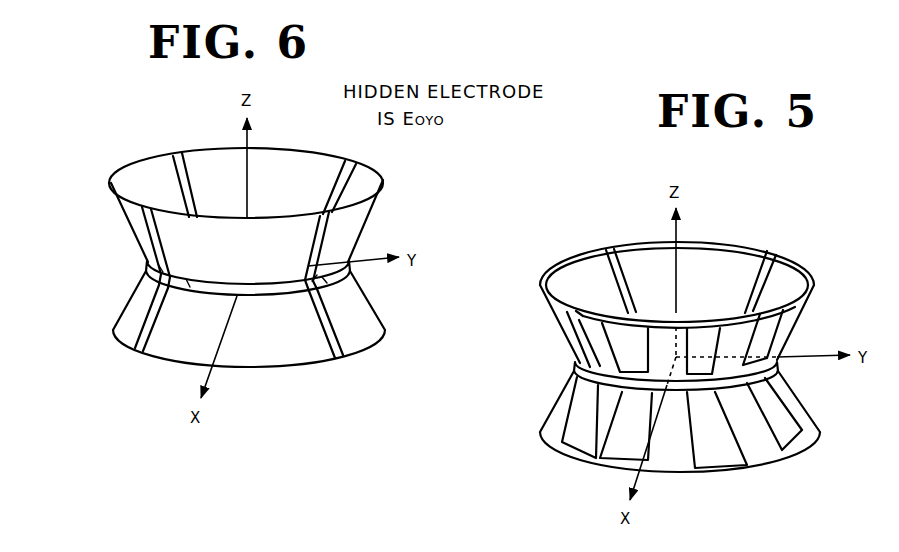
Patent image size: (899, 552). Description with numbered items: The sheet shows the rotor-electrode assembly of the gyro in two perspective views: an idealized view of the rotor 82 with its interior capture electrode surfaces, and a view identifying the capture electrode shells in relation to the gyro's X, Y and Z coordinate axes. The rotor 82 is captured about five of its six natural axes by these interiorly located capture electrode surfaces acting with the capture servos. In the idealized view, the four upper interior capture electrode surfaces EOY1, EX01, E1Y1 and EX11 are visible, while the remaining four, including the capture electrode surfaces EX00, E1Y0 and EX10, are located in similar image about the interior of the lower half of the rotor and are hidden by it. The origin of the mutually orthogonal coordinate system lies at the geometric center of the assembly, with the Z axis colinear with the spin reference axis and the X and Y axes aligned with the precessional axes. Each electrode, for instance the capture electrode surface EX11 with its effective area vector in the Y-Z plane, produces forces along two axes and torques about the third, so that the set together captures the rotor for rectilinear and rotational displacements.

In FIG. 6, the rotor 82 is at (305, 157).
In FIG. 5, the rotor 82 is at (768, 252).
In FIG. 6, the capture electrode surface E0y1 EOY1 is at (190, 148).
In FIG. 5, the capture electrode surface E0y1 EOY1 is at (702, 267).
In FIG. 6, the capture electrode surface Ex01 EX01 is at (134, 225).
In FIG. 5, the capture electrode surface Ex01 EX01 is at (585, 265).
In FIG. 6, the capture electrode surface Ex11 EX11 is at (376, 212).
In FIG. 5, the capture electrode surface Ex11 EX11 is at (796, 278).
In FIG. 6, the capture electrode surface E1y1 E1Y1 is at (199, 253).
In FIG. 5, the capture electrode surface E1y1 E1Y1 is at (583, 311).
In FIG. 6, the capture electrode surface Ex00 EX00 is at (118, 320).
In FIG. 6, the capture electrode surface E1y0 E1Y0 is at (163, 360).
In FIG. 6, the capture electrode surface Ex10 EX10 is at (388, 323).